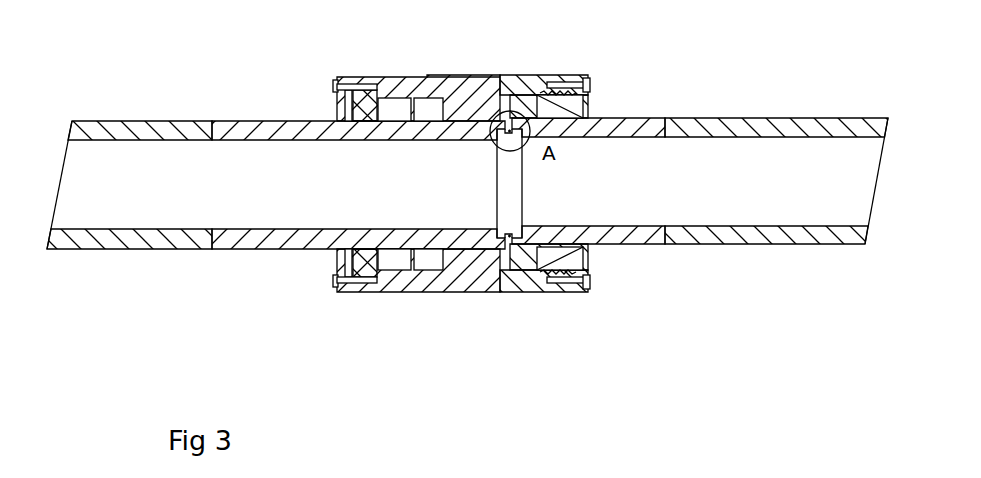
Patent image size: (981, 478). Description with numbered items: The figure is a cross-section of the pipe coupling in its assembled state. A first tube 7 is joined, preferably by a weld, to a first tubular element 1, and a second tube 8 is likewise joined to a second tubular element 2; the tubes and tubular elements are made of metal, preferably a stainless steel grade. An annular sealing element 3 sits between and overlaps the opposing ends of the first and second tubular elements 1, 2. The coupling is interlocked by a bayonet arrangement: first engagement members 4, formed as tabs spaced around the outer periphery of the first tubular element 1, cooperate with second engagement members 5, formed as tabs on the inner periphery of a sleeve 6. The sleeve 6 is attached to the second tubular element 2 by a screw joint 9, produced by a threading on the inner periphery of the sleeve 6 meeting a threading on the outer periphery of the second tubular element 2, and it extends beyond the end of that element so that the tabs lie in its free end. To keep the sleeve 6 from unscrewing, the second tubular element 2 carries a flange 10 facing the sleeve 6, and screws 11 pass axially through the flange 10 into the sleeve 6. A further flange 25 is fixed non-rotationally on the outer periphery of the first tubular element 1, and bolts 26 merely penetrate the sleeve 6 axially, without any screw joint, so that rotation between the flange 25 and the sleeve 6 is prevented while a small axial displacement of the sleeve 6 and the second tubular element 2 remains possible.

The first tubular element 1 is at (270, 128).
The second tubular element 2 is at (634, 126).
The annular sealing element 3 is at (513, 205).
The first engagement members 4 is at (398, 262).
The second engagement members 5 is at (363, 268).
The sleeve 6 is at (415, 77).
The first tube 7 is at (131, 128).
The second tube 8 is at (770, 126).
The screw joint 9 is at (560, 84).
The flange 10 is at (586, 75).
The screws 11 is at (582, 292).
The flange 25 is at (345, 262).
The bolts 26 is at (340, 283).